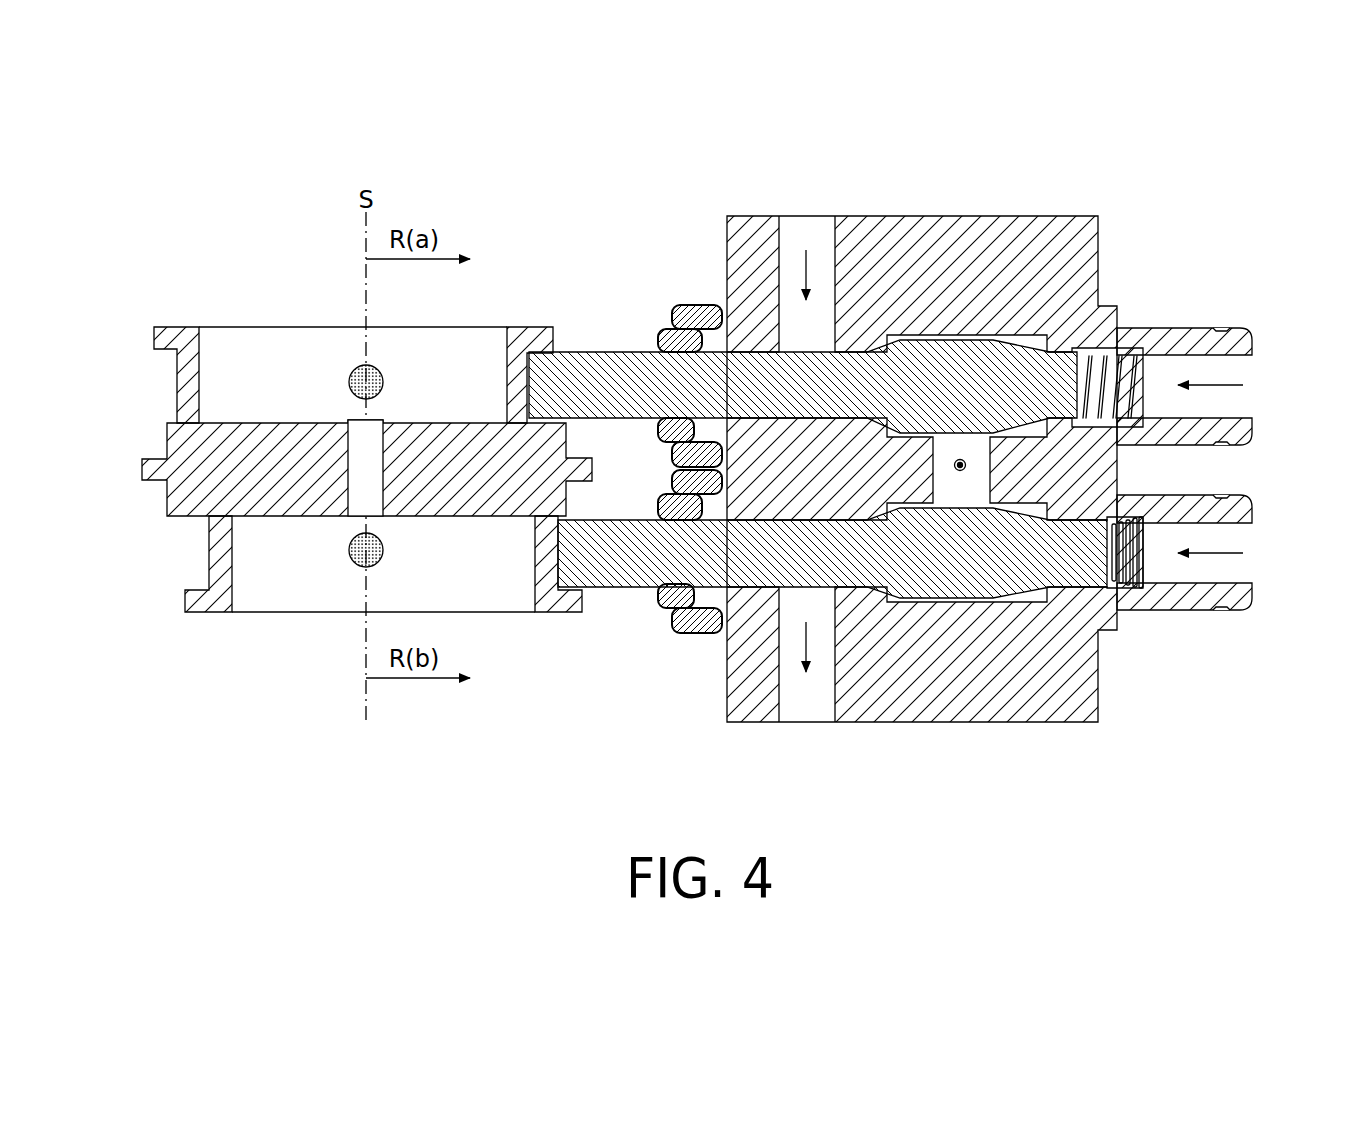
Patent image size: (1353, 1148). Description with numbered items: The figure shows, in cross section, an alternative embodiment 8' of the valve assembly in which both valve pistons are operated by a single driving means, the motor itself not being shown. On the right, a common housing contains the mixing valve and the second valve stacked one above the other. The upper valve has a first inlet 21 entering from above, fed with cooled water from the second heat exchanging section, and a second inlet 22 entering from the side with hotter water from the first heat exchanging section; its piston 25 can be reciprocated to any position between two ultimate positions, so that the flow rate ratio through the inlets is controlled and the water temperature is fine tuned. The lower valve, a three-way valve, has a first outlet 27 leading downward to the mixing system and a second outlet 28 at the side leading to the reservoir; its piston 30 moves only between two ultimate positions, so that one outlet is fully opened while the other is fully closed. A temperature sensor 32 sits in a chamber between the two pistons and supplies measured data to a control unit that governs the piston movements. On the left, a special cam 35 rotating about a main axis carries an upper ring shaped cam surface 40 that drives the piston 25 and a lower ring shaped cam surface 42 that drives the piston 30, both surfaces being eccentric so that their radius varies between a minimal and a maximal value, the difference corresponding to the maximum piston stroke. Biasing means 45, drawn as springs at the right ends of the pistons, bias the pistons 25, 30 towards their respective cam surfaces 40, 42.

The valve assembly embodiment 8' is at (963, 417).
The first inlet 21 is at (793, 228).
The second inlet 22 is at (1243, 374).
The piston 25 is at (976, 402).
The first outlet 27 is at (797, 712).
The second outlet 28 is at (1243, 539).
The piston 30 is at (993, 567).
The temperature sensor 32 is at (967, 466).
The cam 35 is at (248, 340).
The upper ring shaped cam surface 40 is at (178, 385).
The lower ring shaped cam surface 42 is at (190, 575).
The biasing means 45 is at (1128, 345).